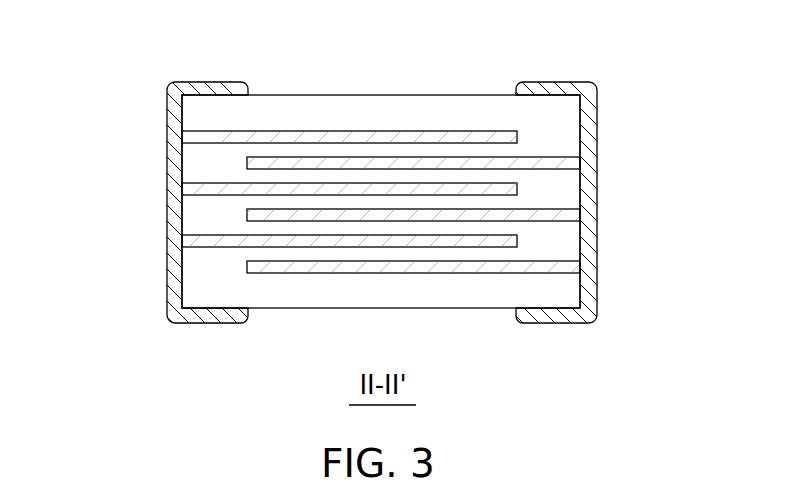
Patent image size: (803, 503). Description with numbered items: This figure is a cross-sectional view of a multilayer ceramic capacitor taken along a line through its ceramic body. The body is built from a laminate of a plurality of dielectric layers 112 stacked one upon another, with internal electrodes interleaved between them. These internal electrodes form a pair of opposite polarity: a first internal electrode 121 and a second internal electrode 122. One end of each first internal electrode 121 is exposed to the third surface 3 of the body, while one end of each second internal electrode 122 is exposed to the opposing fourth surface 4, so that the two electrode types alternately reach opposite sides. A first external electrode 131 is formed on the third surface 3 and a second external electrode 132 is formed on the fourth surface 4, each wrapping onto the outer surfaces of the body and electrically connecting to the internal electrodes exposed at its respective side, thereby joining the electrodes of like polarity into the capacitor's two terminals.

The third surface 3 is at (382, 201).
The fourth surface 4 is at (401, 165).
The dielectric layer 112 is at (497, 201).
The first internal electrode 121 is at (213, 183).
The second internal electrode 122 is at (560, 218).
The first external electrode 131 is at (210, 82).
The second external electrode 132 is at (552, 82).